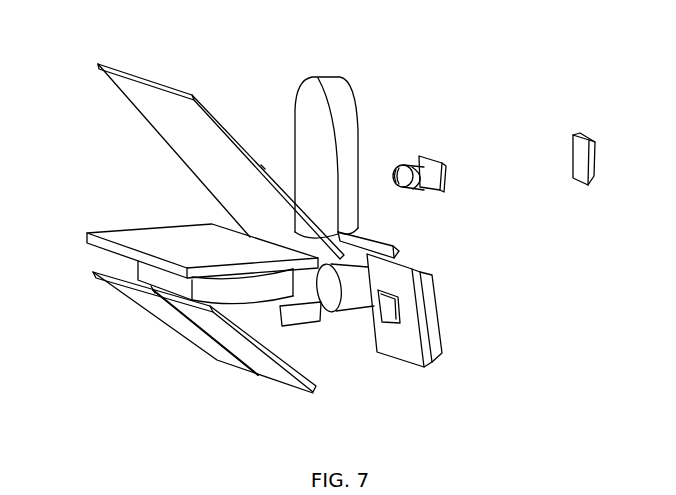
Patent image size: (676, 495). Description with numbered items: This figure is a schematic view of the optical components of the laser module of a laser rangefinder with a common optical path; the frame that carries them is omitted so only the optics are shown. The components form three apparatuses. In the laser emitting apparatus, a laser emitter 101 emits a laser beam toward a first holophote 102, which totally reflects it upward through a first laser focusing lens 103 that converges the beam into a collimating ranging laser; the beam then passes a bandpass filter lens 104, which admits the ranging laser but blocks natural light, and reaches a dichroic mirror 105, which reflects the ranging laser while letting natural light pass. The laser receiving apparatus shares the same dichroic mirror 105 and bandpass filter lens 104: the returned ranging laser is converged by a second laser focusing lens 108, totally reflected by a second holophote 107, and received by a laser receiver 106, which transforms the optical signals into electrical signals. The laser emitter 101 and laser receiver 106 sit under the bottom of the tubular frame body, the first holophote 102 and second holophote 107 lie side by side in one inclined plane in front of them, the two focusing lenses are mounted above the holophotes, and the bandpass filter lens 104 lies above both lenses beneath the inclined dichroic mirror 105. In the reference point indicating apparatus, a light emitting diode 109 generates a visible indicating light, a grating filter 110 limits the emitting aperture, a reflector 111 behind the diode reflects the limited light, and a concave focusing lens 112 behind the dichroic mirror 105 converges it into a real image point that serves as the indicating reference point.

The laser emitter 101 is at (331, 303).
The first holophote 102 is at (217, 362).
The first laser focusing lens 103 is at (138, 263).
The bandpass filter lens 104 is at (148, 238).
The dichroic mirror 105 is at (139, 73).
The laser receiver 106 is at (392, 320).
The second holophote 107 is at (275, 381).
The second laser focusing lens 108 is at (250, 290).
The light emitting diode 109 is at (420, 183).
The grating filter 110 is at (443, 170).
The reflector 111 is at (596, 175).
The concave focusing lens 112 is at (328, 77).